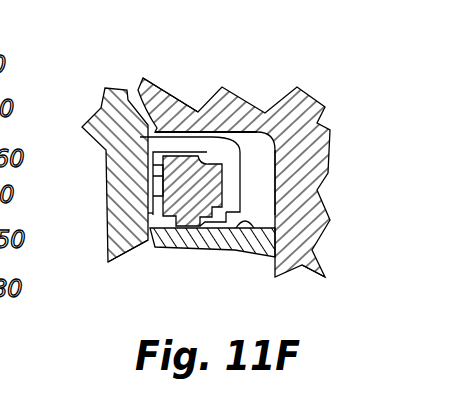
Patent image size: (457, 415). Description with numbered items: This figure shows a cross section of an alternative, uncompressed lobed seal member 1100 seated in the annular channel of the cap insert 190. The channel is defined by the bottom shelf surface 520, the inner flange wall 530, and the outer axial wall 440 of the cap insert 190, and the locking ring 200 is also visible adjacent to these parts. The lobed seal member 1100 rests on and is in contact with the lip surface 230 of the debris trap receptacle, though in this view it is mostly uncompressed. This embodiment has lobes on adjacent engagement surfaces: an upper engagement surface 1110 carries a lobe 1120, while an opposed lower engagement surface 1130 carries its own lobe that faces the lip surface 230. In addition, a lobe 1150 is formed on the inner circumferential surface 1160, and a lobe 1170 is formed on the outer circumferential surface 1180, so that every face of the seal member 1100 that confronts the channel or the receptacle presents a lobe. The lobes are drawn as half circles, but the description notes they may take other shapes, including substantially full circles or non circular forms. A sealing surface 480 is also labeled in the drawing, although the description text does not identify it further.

The cap insert 190 is at (95, 118).
The locking ring 200 is at (288, 110).
The lip surface 230 is at (250, 232).
The outer axial wall 440 is at (148, 250).
The sealing surface 480 is at (215, 197).
The bottom shelf surface 520 is at (205, 150).
The inner flange wall 530 is at (222, 170).
The lobed seal member 1100 is at (170, 165).
The upper engagement surface 1110 is at (157, 130).
The lobe 1120 is at (156, 160).
The lower engagement surface 1130 is at (202, 222).
The lobe 1150 is at (163, 187).
The inner circumferential surface 1160 is at (148, 213).
The lobe 1170 is at (290, 238).
The outer circumferential surface 1180 is at (218, 188).